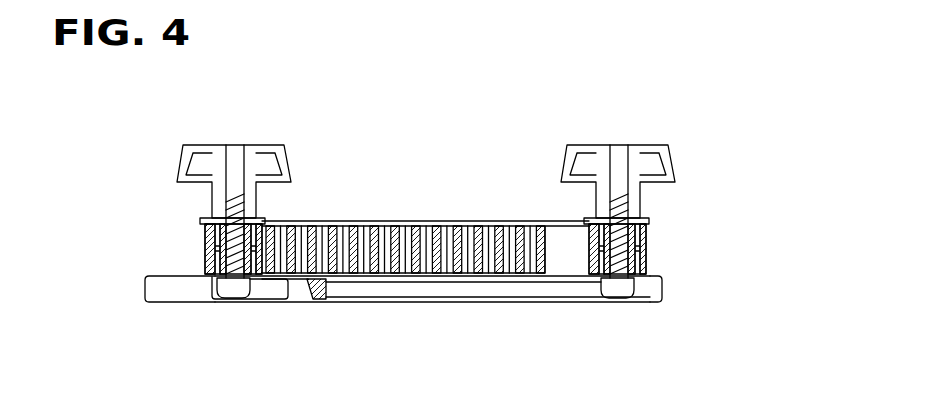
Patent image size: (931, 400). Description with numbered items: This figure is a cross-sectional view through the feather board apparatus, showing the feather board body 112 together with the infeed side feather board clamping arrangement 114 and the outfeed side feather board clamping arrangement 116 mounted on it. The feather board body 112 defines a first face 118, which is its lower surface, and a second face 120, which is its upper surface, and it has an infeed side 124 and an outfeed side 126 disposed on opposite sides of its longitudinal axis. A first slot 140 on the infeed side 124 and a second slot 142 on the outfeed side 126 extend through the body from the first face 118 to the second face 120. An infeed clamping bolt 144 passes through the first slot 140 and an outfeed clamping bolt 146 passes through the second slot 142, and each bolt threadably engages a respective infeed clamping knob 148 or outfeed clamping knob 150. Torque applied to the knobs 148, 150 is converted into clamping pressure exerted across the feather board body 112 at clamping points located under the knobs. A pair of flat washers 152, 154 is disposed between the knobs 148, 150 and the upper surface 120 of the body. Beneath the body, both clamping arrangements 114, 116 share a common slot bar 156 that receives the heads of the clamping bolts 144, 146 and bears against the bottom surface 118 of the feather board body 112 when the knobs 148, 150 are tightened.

The feather board body 112 is at (207, 248).
The infeed side feather board clamping arrangement 114 is at (198, 212).
The outfeed side feather board clamping arrangement 116 is at (649, 217).
The first face 118 is at (455, 274).
The second face 120 is at (453, 223).
The infeed side 124 is at (134, 270).
The outfeed side 126 is at (689, 264).
The first slot 140 is at (245, 203).
The second slot 142 is at (609, 205).
The infeed clamping bolt 144 is at (226, 298).
The outfeed clamping bolt 146 is at (612, 298).
The infeed clamping knob 148 is at (180, 150).
The outfeed clamping knob 150 is at (670, 157).
The flat washer 152 is at (207, 222).
The flat washer 154 is at (651, 221).
The slot bar 156 is at (546, 283).